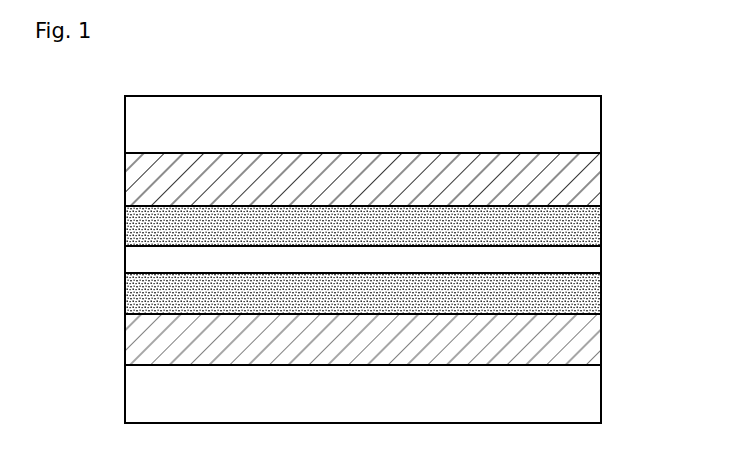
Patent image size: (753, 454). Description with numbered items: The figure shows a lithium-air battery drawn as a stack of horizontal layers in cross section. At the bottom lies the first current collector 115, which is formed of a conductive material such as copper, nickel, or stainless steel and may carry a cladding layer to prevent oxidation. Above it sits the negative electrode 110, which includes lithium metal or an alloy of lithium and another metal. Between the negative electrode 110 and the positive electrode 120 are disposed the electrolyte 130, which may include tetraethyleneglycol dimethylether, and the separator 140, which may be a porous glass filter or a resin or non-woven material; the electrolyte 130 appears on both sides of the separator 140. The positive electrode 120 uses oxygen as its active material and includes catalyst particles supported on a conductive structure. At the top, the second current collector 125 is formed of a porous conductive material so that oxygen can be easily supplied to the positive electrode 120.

The second current collector 125 is at (593, 123).
The positive electrode 120 is at (593, 180).
The electrolyte 130 is at (593, 225).
The separator 140 is at (593, 259).
The negative electrode 110 is at (593, 341).
The first current collector 115 is at (593, 396).